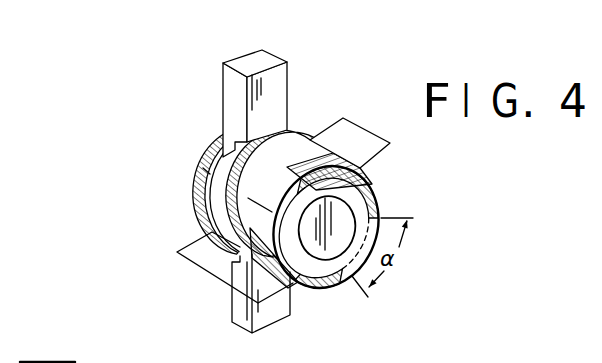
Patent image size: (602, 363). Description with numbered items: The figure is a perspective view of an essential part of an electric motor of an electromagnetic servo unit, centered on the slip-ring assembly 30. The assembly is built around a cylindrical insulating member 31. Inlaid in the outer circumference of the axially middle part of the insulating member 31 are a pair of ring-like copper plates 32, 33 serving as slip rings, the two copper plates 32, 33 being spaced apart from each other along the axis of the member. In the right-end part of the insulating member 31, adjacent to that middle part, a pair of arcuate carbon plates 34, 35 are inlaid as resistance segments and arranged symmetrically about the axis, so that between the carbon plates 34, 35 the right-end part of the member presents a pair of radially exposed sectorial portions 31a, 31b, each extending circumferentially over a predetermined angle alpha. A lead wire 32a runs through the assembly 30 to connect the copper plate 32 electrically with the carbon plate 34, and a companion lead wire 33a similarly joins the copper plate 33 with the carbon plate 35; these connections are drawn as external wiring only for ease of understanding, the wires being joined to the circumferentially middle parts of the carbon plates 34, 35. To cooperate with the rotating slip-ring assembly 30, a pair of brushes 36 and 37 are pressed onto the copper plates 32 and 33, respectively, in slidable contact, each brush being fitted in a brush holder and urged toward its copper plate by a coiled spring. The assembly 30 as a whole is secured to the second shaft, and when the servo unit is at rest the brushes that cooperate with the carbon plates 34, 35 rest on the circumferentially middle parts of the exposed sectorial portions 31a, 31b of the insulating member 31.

The slip-ring assembly 30 is at (194, 222).
The cylindrical insulating member 31 is at (233, 288).
The radially exposed sectorial portion 31a is at (290, 282).
The radially exposed sectorial portion 31b is at (382, 214).
The ring-like copper plate 32 is at (207, 228).
The lead wire 32a is at (193, 261).
The ring-like copper plate 33 is at (313, 143).
The upper plate 33a is at (347, 120).
The arcuate carbon plate 34 is at (328, 283).
The arcuate carbon plate 35 is at (370, 183).
The brush 36 is at (232, 90).
The brush 37 is at (243, 312).